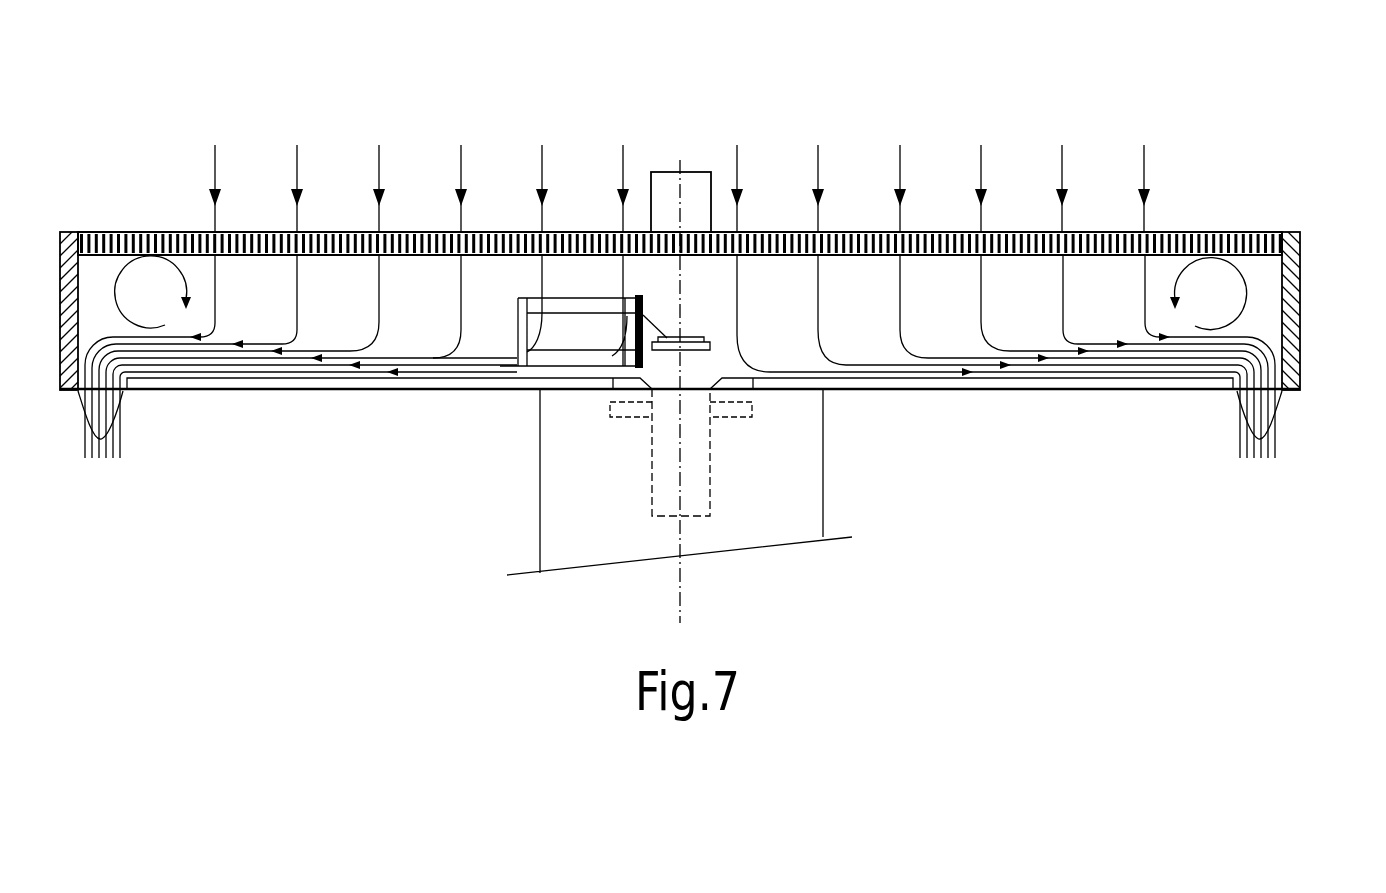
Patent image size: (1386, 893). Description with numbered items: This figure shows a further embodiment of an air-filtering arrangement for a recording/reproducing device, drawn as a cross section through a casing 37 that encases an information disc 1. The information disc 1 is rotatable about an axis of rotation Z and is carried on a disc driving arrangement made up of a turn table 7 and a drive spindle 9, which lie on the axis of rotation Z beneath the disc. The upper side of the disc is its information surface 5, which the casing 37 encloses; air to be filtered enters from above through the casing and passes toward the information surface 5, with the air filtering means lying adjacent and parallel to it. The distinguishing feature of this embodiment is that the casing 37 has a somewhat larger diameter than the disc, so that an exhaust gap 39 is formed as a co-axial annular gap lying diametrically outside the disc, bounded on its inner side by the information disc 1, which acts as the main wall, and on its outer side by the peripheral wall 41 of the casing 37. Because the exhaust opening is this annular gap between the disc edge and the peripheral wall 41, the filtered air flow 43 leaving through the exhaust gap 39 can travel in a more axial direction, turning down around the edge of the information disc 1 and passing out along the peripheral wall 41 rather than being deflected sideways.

The information disc 1 is at (1080, 391).
The information surface 5 is at (765, 375).
The turn table 7 is at (806, 459).
The drive spindle 9 is at (660, 455).
The casing 37 is at (1304, 217).
The exhaust gap 39 is at (1265, 396).
The peripheral wall 41 is at (1300, 277).
The air flow 43 is at (134, 472).
The axis of rotation Z is at (680, 168).